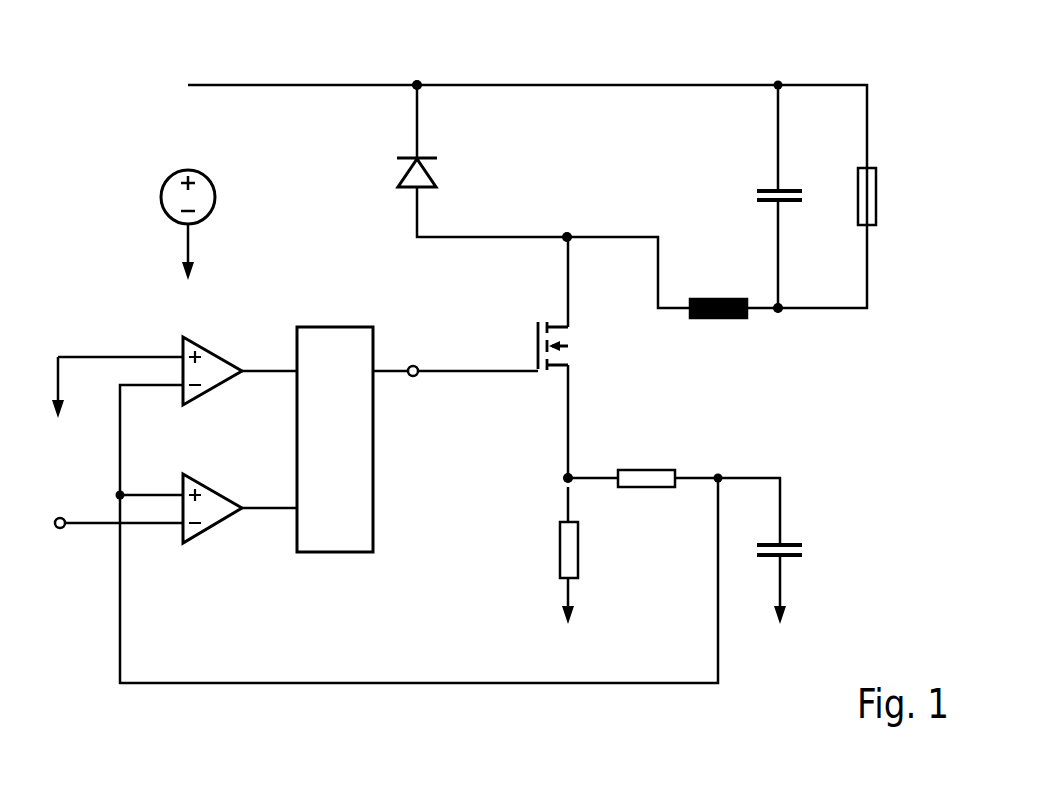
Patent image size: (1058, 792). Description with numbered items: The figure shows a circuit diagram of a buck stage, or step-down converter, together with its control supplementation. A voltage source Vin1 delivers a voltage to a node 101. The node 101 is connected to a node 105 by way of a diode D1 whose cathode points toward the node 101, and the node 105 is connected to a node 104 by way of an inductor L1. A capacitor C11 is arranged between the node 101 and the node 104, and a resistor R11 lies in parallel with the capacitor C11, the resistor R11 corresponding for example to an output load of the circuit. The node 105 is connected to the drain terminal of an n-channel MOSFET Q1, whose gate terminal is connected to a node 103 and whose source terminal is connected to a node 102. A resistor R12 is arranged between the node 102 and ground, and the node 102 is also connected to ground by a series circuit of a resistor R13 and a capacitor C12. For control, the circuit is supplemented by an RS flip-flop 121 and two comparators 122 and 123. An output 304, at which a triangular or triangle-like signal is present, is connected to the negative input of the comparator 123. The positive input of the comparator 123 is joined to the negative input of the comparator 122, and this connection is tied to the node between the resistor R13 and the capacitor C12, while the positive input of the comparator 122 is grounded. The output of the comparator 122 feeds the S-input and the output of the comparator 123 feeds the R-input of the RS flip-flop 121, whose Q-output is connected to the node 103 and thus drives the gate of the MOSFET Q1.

The node 101 is at (417, 80).
The node 102 is at (566, 476).
The node 103 is at (415, 364).
The node 104 is at (778, 312).
The node 105 is at (567, 233).
The RS flip-flop 121 is at (342, 325).
The comparator 122 is at (224, 352).
The comparator 123 is at (224, 492).
The output 304 is at (58, 530).
The voltage source Vin1 is at (216, 197).
The diode D1 is at (437, 172).
The capacitor C11 is at (757, 195).
The resistor R11 is at (876, 195).
The inductor L1 is at (718, 318).
The n-channel MOSFET Q1 is at (538, 345).
The resistor R13 is at (647, 470).
The resistor R12 is at (560, 553).
The capacitor C12 is at (800, 550).